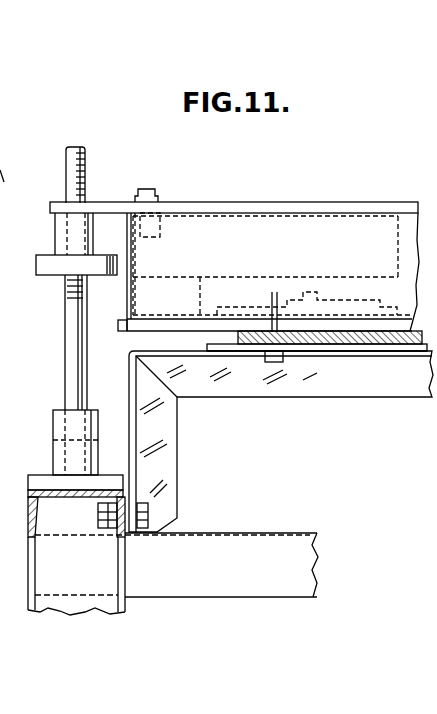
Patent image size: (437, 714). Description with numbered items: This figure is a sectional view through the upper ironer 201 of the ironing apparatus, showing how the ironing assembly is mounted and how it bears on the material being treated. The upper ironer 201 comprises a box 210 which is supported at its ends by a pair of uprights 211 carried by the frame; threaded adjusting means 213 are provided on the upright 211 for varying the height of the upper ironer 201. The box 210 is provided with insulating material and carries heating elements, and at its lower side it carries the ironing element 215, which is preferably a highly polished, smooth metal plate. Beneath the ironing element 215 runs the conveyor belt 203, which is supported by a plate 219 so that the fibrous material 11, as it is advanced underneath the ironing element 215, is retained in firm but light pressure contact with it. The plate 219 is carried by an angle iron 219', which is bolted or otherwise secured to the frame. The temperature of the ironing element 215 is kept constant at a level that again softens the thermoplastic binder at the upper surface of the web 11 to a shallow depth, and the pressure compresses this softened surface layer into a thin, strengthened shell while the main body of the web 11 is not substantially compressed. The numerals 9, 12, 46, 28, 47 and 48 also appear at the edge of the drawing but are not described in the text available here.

The upper ironer 201 is at (327, 201).
The box 210 is at (255, 230).
The upright 211 is at (85, 177).
The threaded adjusting means 213 is at (53, 270).
The ironing element 215 is at (380, 330).
The conveyor belt 203 is at (403, 345).
The angle iron 219' is at (281, 441).
The plate 219 is at (317, 393).
The fibrous material 11 is at (362, 333).
The lower flange 9 is at (61, 458).
The hatched support box 12 is at (35, 512).
The member 46 is at (7, 157).
The member 28 is at (8, 229).
The member 47 is at (7, 278).
The member 48 is at (8, 360).